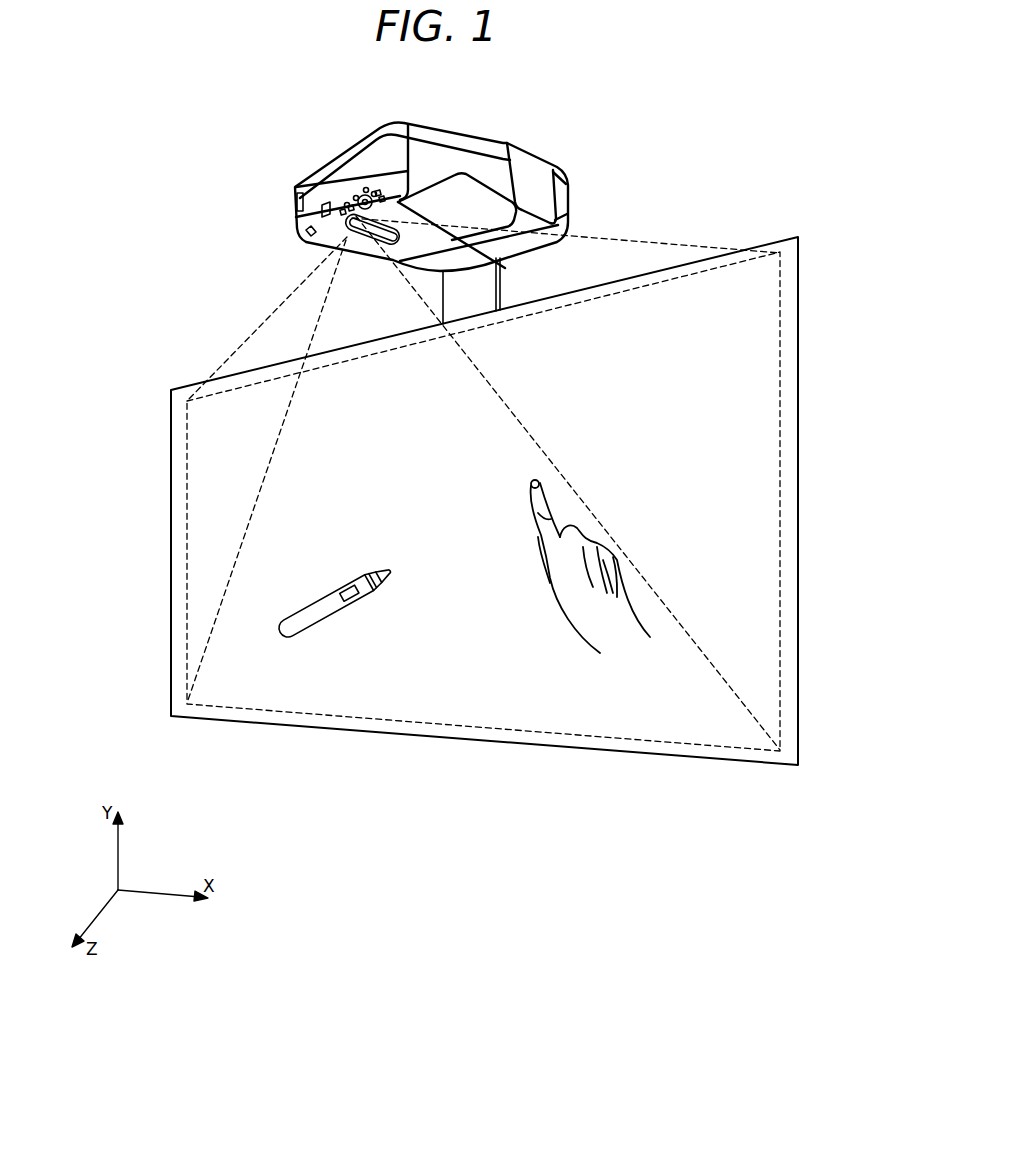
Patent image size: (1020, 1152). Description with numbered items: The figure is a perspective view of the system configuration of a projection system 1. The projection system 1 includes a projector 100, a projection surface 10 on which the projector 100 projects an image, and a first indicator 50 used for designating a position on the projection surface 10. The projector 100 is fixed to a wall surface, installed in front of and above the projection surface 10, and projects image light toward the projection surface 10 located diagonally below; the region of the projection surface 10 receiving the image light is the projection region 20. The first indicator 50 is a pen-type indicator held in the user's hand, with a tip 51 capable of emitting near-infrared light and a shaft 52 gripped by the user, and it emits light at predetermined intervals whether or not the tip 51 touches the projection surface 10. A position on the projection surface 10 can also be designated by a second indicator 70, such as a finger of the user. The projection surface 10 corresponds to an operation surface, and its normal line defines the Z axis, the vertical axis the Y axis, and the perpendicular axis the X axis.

The projection system 1 is at (678, 161).
The projector 100 is at (449, 131).
The projection surface 10 is at (171, 568).
The projection region 20 is at (187, 486).
The first indicator 50 is at (305, 601).
The tip 51 is at (384, 567).
The shaft 52 is at (333, 617).
The second indicator 70 is at (530, 483).